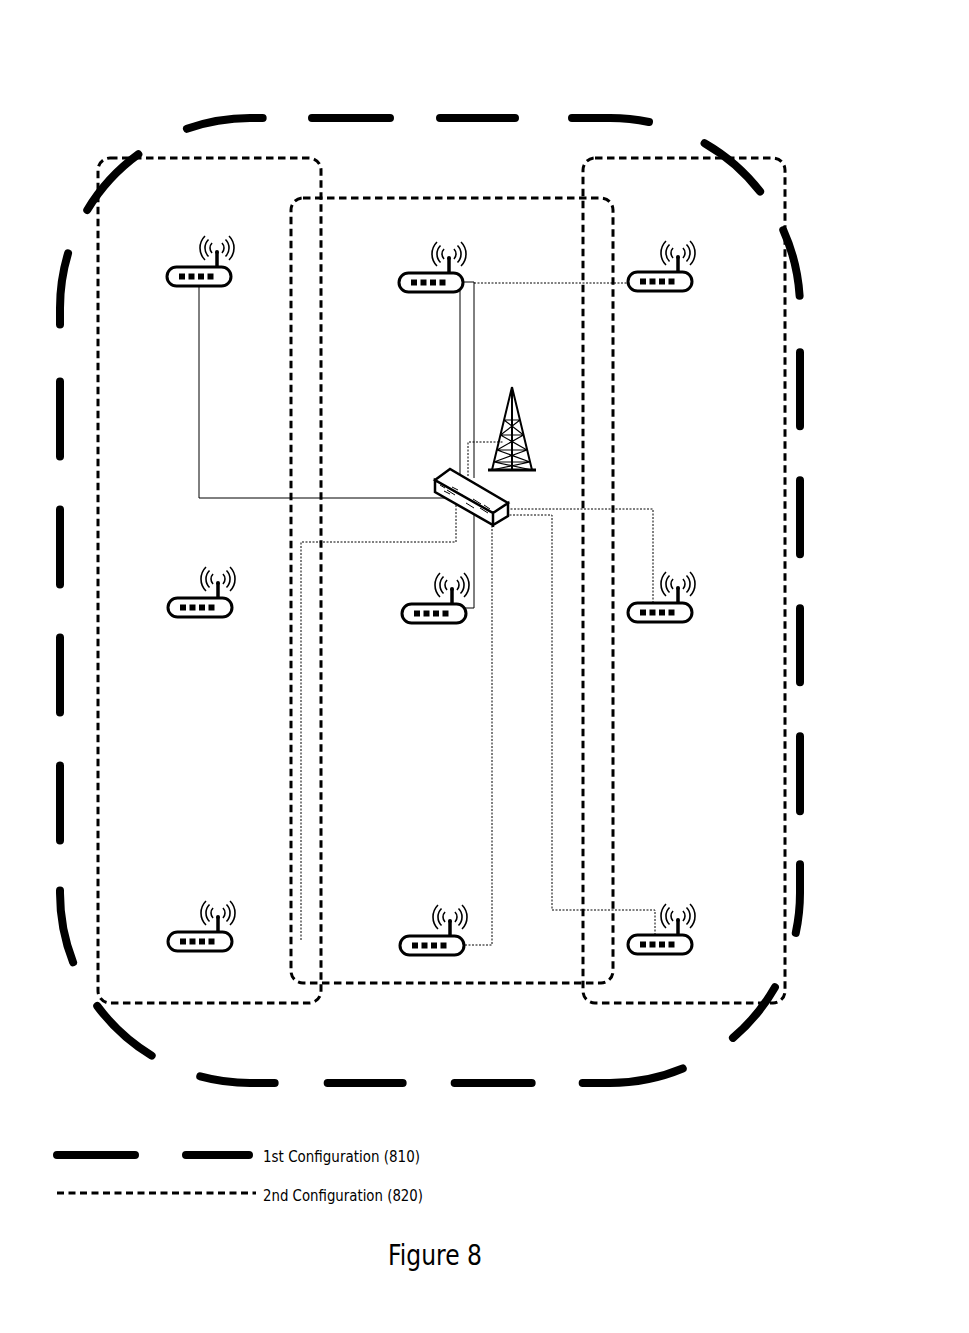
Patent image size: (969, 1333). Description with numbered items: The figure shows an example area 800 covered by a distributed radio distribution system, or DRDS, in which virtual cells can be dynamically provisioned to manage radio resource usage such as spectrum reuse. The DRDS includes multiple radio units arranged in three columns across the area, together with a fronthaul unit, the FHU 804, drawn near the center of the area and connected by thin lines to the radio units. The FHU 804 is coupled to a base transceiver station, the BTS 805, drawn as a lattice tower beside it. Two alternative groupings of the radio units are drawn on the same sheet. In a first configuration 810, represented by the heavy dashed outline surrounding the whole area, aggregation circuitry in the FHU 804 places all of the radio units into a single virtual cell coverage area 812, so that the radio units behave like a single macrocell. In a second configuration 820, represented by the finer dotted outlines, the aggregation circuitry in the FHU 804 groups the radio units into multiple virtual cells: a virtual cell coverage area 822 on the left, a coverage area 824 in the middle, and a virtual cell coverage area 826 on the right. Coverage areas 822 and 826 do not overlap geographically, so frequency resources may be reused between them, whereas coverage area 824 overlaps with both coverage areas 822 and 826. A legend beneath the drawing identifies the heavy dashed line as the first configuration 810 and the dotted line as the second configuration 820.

The area covered by a DRDS 800 is at (105, 43).
The FHU 804 is at (508, 503).
The BTS 805 is at (519, 433).
The first configuration 810 is at (256, 103).
The single virtual cell coverage area 812 is at (608, 114).
The second configuration 820 is at (381, 181).
The virtual cell coverage area 822 is at (281, 158).
The coverage area 824 is at (497, 198).
The virtual cell coverage area 826 is at (609, 158).